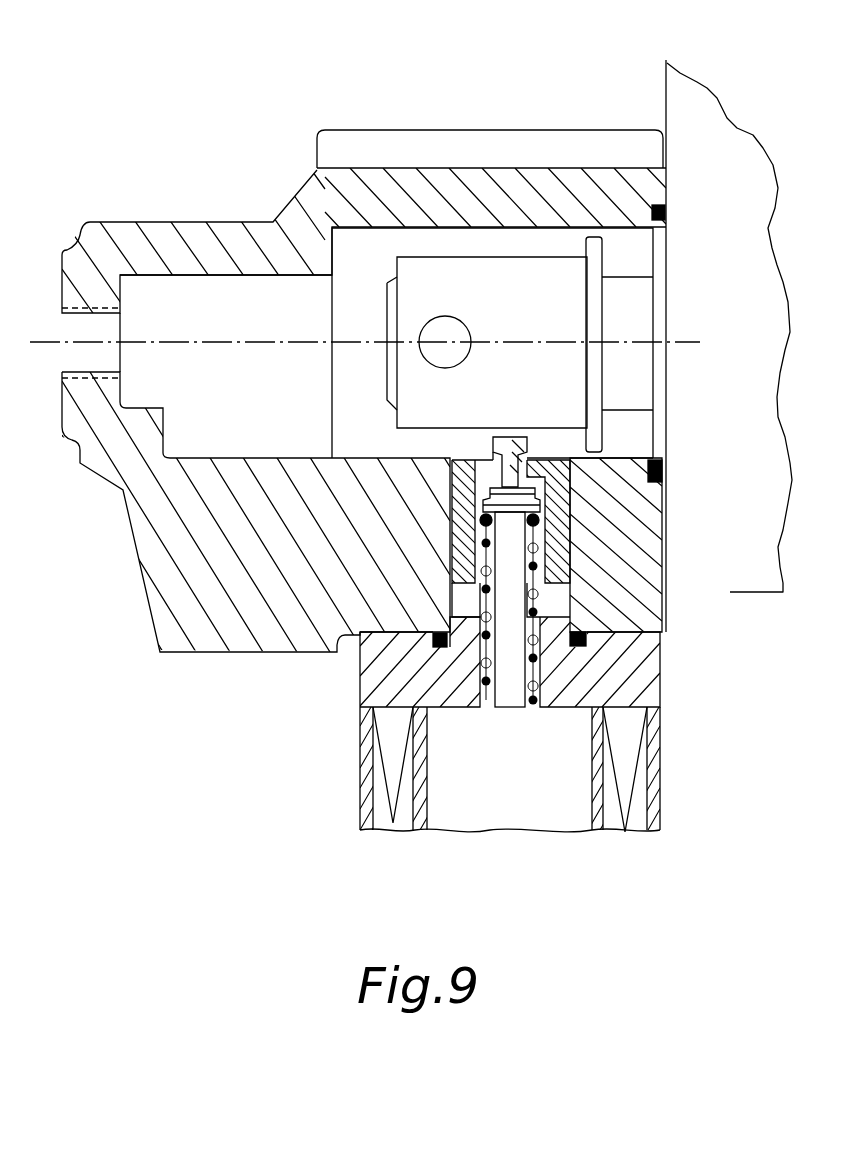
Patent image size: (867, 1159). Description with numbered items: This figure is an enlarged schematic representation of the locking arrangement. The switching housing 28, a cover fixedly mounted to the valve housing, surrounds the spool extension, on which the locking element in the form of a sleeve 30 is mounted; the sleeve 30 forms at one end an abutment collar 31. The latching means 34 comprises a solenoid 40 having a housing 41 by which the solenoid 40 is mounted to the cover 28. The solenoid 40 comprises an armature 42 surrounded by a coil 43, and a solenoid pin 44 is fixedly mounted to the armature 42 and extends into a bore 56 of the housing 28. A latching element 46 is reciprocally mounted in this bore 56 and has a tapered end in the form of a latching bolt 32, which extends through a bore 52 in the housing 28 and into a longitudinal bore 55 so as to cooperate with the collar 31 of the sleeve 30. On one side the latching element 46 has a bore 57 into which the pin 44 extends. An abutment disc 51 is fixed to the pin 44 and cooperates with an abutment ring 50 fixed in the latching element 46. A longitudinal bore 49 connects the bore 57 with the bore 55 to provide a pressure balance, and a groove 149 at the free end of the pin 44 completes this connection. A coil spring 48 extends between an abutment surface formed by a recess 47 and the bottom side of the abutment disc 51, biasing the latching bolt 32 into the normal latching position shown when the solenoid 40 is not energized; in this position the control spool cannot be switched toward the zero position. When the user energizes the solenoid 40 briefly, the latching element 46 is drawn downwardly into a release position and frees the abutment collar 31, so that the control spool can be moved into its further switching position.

The switching housing 28 is at (615, 187).
The sleeve 30 is at (427, 282).
The abutment collar 31 is at (607, 248).
The latching bolt 32 is at (540, 455).
The latching means 34 is at (352, 757).
The solenoid 40 is at (612, 686).
The housing 41 is at (638, 695).
The armature 42 is at (543, 810).
The coil 43 is at (633, 800).
The solenoid pin 44 is at (482, 655).
The latching element 46 is at (580, 572).
The recess 47 is at (507, 665).
The coil spring 48 is at (437, 642).
The longitudinal bore 49 is at (514, 450).
The abutment ring 50 is at (545, 521).
The abutment disc 51 is at (545, 510).
The bore 52 is at (642, 488).
The longitudinal bore 55 is at (480, 237).
The bore 56 is at (450, 600).
The bore 57 is at (540, 544).
The groove 149 is at (495, 458).